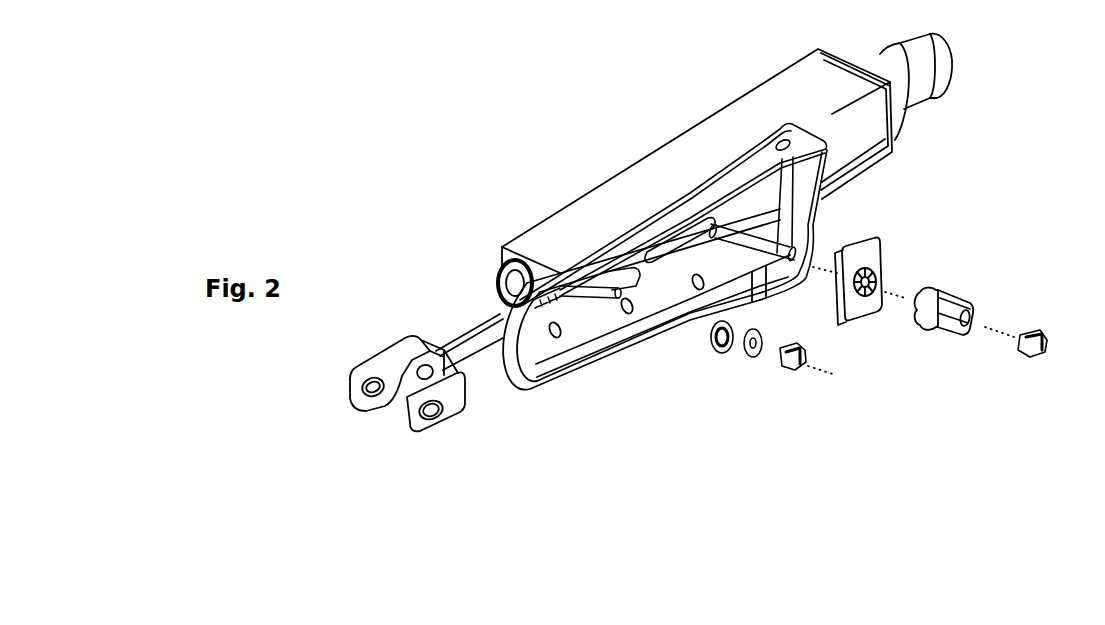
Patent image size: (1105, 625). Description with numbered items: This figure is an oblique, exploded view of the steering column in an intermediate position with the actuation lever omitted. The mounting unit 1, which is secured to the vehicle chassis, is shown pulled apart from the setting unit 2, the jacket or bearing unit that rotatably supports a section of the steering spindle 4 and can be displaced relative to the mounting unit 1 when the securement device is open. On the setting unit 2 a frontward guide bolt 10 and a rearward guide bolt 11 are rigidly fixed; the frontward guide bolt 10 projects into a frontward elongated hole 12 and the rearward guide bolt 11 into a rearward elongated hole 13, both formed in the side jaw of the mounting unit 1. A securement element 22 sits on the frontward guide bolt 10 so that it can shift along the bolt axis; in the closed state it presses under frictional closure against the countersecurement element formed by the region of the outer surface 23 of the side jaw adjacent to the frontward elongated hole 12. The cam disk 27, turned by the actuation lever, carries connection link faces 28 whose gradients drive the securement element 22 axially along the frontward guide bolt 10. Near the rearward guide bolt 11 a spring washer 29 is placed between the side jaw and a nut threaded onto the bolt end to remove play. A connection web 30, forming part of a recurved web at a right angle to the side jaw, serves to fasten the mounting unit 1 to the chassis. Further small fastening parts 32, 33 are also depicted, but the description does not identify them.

The mounting unit 1 is at (555, 393).
The setting unit 2 is at (895, 165).
The steering spindle 4 is at (935, 105).
The frontward guide bolt 10 is at (761, 212).
The rearward guide bolt 11 is at (583, 286).
The frontward elongated hole 12 is at (695, 258).
The rearward elongated hole 13 is at (592, 258).
The securement element 22 is at (883, 246).
The outer surface 23 is at (623, 275).
The cam disk 27 is at (937, 288).
The connection link faces 28 is at (872, 300).
The spring washer 29 is at (749, 360).
The connection web 30 is at (730, 175).
The spring washer 32 is at (718, 357).
The nut 33 is at (790, 370).